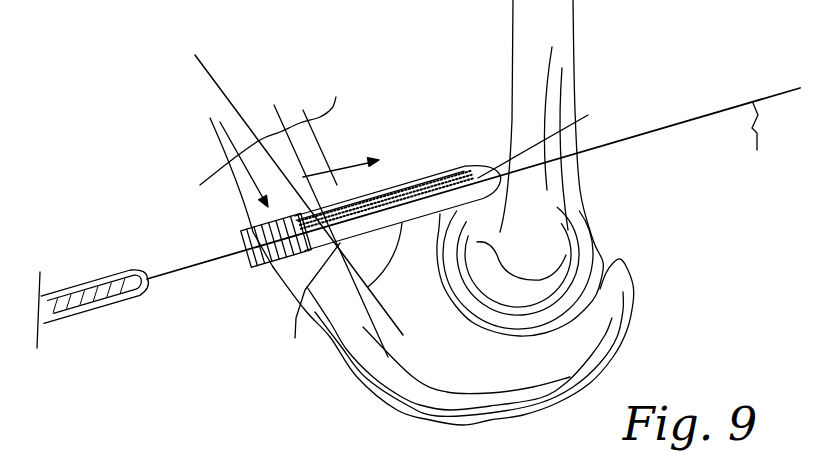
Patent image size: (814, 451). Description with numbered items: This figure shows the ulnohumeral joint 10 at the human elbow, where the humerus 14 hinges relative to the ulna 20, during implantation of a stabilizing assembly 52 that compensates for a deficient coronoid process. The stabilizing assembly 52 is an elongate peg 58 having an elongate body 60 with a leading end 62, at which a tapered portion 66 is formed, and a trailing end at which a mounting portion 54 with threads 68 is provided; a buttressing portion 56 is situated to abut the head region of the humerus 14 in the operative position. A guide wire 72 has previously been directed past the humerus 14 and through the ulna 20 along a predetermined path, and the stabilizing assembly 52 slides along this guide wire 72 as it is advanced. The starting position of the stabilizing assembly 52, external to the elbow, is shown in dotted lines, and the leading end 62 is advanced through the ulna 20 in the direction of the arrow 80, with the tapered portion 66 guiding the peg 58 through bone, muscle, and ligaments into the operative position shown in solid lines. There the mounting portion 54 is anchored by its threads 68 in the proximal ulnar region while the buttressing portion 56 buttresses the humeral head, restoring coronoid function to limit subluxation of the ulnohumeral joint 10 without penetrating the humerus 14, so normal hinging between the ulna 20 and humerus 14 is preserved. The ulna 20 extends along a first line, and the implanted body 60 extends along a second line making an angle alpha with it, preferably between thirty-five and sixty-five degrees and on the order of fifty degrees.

The ulnohumeral joint 10 is at (632, 246).
The humerus 14 is at (560, 52).
The ulna 20 is at (246, 195).
The stabilizing assembly 52 is at (107, 306).
The mounting portion 54 is at (260, 274).
The buttressing portion 56 is at (484, 206).
The elongate peg 58 is at (295, 340).
The elongate body 60 is at (278, 104).
The leading end 62 is at (588, 118).
The tapered portion 66 is at (476, 155).
The threads 68 is at (208, 120).
The guide wire 72 is at (677, 118).
The arrow 80 is at (397, 184).